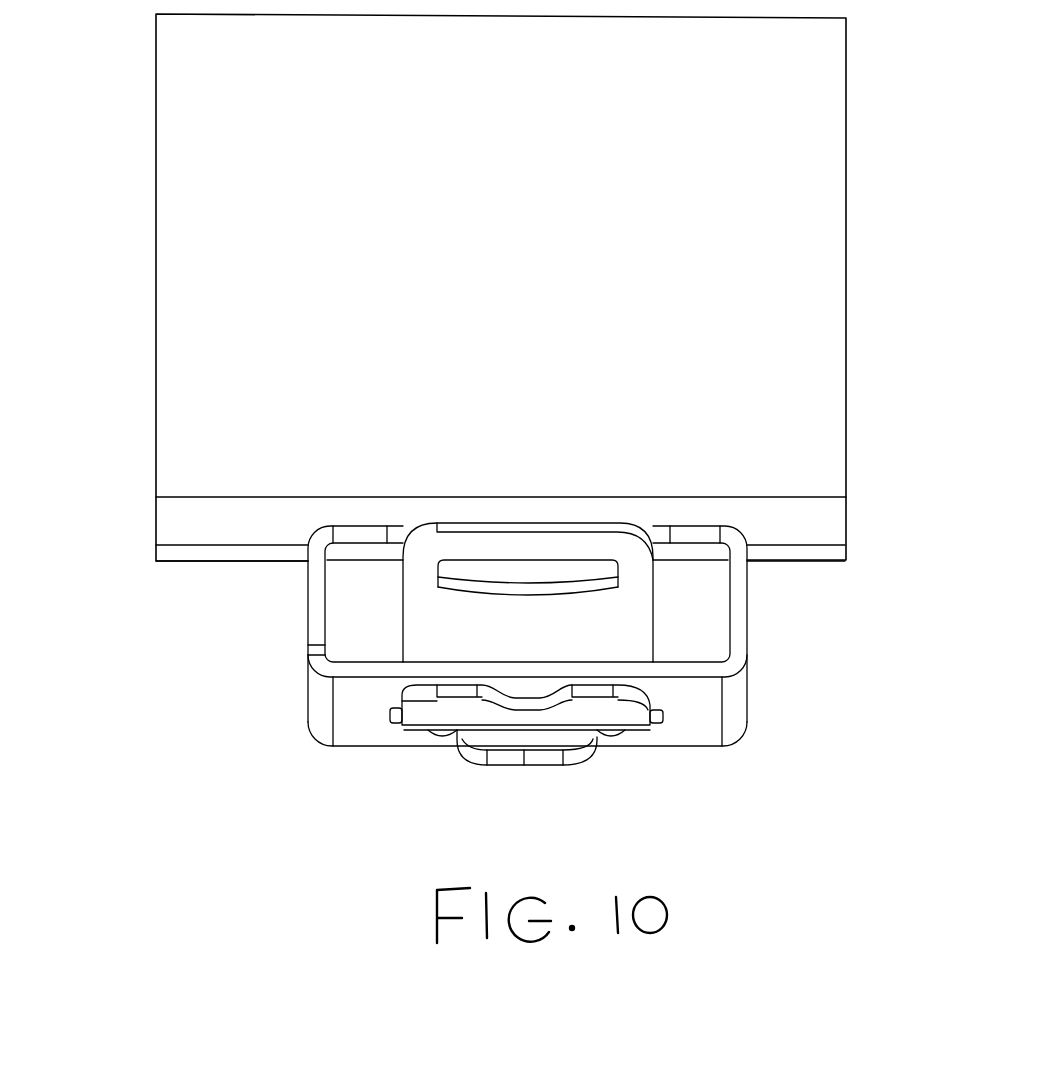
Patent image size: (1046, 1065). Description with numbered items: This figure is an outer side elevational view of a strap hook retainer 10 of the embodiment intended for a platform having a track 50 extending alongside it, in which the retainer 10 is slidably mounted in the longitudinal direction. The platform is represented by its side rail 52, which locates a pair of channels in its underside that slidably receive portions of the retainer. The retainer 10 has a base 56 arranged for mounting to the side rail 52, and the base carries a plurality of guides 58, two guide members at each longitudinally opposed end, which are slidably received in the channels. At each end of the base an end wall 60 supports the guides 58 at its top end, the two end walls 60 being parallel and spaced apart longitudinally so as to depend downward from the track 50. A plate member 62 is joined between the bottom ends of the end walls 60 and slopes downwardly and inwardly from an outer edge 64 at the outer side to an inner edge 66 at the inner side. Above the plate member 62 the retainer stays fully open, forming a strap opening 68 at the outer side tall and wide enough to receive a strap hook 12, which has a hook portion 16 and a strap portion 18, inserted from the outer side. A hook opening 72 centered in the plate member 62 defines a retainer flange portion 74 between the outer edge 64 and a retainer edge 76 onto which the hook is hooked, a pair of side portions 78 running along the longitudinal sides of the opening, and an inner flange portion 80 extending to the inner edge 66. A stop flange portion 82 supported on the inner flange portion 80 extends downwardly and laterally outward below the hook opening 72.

The strap hook retainer 10 is at (268, 590).
The strap hook 12 is at (429, 560).
The hook portion 16 is at (452, 708).
The strap portion 18 is at (478, 548).
The track 50 is at (856, 522).
The side rail 52 is at (833, 308).
The base 56 is at (781, 581).
The guides 58 is at (690, 532).
The end wall 60 is at (752, 622).
The plate member 62 is at (358, 716).
The outer edge 64 is at (315, 624).
The inner edge 66 is at (693, 748).
The strap opening 68 is at (700, 635).
The hook opening 72 is at (394, 730).
The retainer flange portion 74 is at (655, 692).
The retainer edge 76 is at (657, 705).
The side portions 78 is at (343, 705).
The inner flange portion 80 is at (636, 745).
The stop flange portion 82 is at (526, 752).